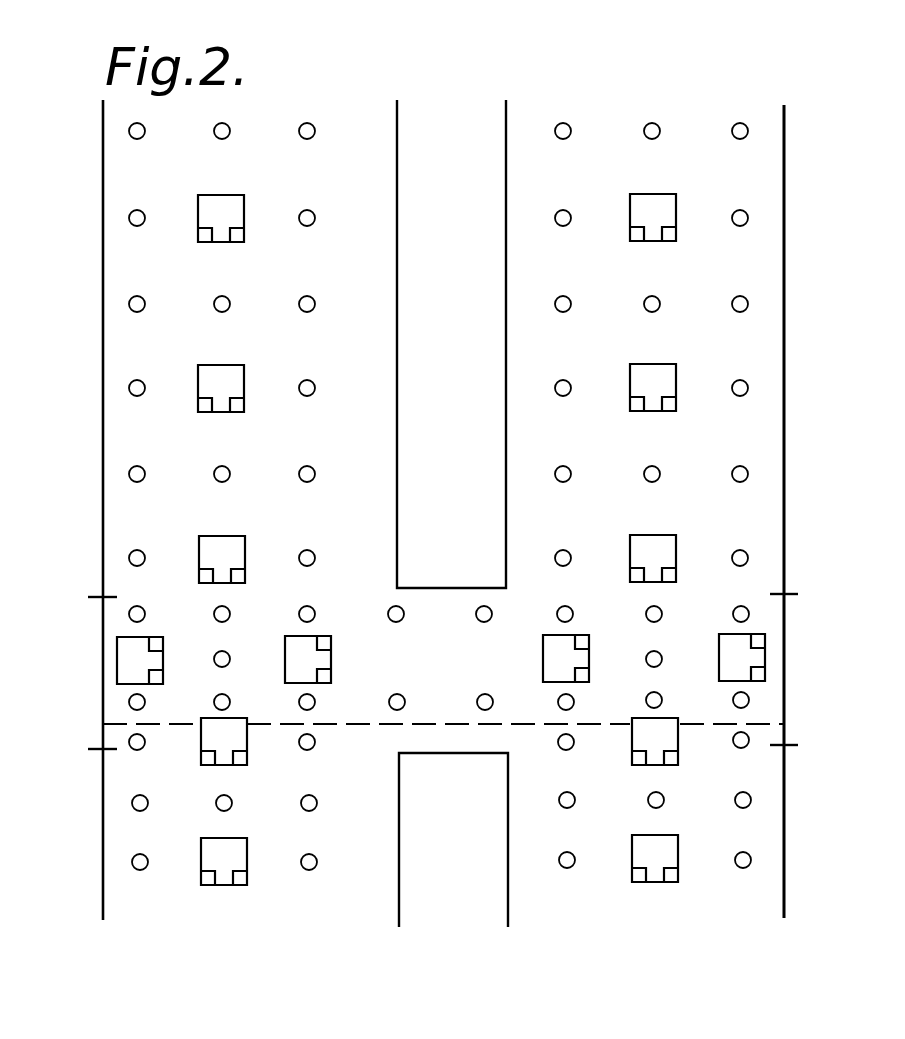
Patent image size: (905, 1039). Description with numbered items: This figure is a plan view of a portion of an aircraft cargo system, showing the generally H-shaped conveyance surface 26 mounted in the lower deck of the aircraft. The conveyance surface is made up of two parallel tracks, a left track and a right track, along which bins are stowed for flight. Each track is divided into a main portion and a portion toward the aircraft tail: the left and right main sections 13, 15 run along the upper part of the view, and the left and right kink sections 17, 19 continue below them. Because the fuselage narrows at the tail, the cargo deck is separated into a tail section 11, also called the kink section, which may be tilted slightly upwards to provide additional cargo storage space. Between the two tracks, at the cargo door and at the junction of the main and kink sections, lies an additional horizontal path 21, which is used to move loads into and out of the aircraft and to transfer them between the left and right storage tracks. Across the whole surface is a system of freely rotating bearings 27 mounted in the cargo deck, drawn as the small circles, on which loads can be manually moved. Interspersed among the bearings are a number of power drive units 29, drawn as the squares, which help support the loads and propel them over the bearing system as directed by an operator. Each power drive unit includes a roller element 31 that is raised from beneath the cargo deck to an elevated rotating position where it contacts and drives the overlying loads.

The tail section 11 is at (92, 850).
The left main section 13 is at (321, 126).
The right main section 15 is at (745, 103).
The left kink section 17 is at (340, 888).
The right kink section 19 is at (748, 898).
The additional path 21 is at (95, 670).
The H-shaped conveyance surface 26 is at (462, 80).
The freely rotating bearings 27 is at (312, 381).
The power drive unit 29 is at (248, 554).
The roller element 31 is at (664, 236).